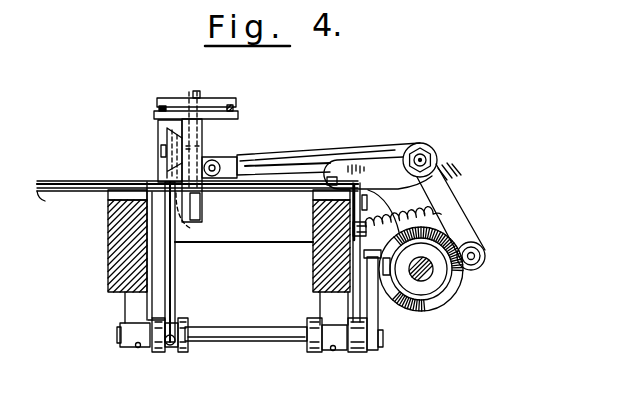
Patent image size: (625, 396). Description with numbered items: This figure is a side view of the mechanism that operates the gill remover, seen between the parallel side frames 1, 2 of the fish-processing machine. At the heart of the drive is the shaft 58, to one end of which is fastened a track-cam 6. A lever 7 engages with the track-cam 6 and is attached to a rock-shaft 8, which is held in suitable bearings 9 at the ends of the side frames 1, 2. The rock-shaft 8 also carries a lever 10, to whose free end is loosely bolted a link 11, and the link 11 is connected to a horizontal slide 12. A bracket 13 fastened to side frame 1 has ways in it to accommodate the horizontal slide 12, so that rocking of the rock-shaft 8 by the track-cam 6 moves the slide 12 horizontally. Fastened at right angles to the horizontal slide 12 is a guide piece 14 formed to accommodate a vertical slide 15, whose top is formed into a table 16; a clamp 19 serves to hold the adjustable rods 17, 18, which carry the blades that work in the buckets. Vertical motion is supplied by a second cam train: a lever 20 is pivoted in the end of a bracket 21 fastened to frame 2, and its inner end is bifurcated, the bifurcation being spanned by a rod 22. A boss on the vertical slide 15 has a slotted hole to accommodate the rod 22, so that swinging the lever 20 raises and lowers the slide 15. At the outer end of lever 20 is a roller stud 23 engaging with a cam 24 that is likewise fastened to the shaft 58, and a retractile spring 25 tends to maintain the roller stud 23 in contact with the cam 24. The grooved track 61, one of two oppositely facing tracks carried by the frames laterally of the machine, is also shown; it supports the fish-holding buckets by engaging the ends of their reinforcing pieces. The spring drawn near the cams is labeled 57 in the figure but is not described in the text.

The side frame 1 is at (108, 269).
The side frame 2 is at (313, 268).
The track-cam 6 is at (389, 297).
The lever 7 is at (370, 306).
The rock-shaft 8 is at (254, 342).
The bearings 9 is at (134, 348).
The lever 10 is at (173, 302).
The link 11 is at (194, 217).
The horizontal slide 12 is at (168, 135).
The bracket 13 is at (162, 125).
The guide piece 14 is at (192, 132).
The vertical slide 15 is at (201, 210).
The table 16 is at (240, 115).
The adjustable rod 17 is at (234, 106).
The adjustable rod 18 is at (160, 105).
The clamp 19 is at (233, 86).
The lever 20 is at (276, 160).
The bracket 21 is at (392, 163).
The rod 22 is at (218, 162).
The roller stud 23 is at (478, 265).
The cam 24 is at (451, 303).
The retractile spring 25 is at (452, 189).
The spring 57 is at (377, 213).
The shaft 58 is at (414, 281).
The grooved track 61 is at (70, 182).